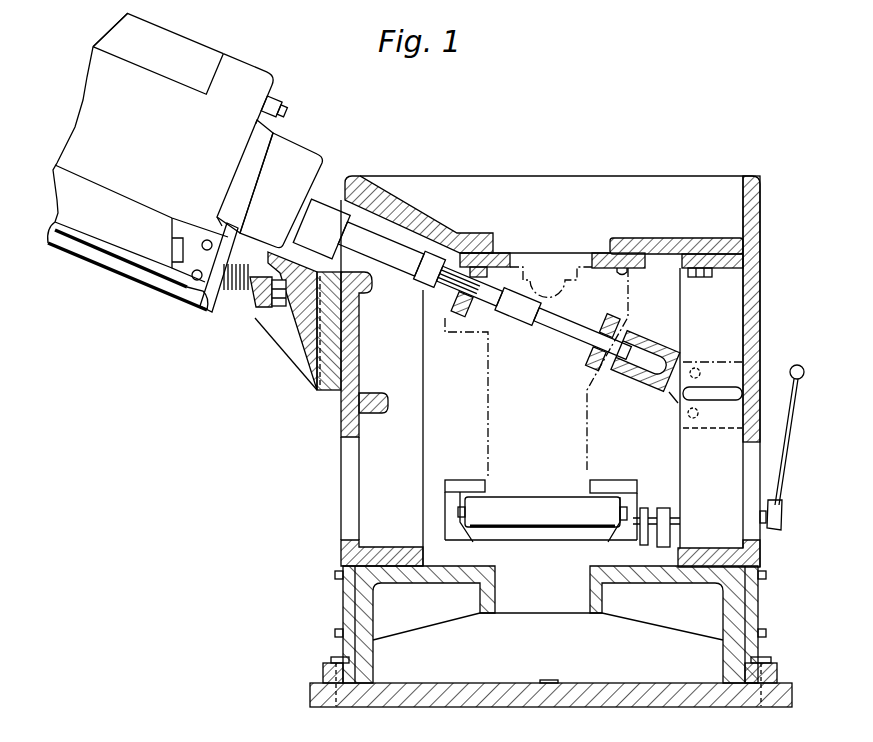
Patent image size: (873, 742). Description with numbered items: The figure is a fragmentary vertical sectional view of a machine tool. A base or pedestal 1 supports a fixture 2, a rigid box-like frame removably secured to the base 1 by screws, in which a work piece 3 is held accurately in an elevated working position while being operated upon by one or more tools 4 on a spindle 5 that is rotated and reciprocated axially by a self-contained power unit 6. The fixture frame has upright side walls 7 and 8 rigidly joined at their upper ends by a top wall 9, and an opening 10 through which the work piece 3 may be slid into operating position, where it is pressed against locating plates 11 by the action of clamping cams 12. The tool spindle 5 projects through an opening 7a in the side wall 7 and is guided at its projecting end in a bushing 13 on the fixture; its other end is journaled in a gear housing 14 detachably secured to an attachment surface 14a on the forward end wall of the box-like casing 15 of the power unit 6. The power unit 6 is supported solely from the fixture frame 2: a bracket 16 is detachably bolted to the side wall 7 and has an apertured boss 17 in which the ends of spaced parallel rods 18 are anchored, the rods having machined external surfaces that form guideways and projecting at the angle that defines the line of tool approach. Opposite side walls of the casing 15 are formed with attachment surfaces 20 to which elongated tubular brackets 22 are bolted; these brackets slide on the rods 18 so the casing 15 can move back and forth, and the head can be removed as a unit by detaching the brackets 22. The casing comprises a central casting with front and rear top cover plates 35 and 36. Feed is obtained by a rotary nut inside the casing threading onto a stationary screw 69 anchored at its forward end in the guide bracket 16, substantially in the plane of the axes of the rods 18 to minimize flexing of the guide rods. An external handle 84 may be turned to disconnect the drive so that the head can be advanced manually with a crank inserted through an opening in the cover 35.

The base 1 is at (638, 695).
The fixture 2 is at (698, 188).
The work piece 3 is at (488, 363).
The tools 4 is at (466, 305).
The spindle 5 is at (400, 263).
The power unit 6 is at (190, 179).
The side wall 7 is at (347, 426).
The opening 7a is at (353, 207).
The side wall 8 is at (756, 322).
The top wall 9 is at (643, 242).
The opening 10 is at (430, 436).
The locating plates 11 is at (500, 252).
The clamping cams 12 is at (550, 503).
The bushing 13 is at (627, 368).
The gear housing 14 is at (303, 156).
The attachment surface 14a is at (270, 167).
The casing 15 is at (98, 122).
The bracket 16 is at (317, 389).
The boss 17 is at (273, 314).
The rods 18 is at (173, 293).
The attachment surfaces 20 is at (203, 284).
The tubular brackets 22 is at (117, 248).
The front top cover plate 35 is at (260, 82).
The rear top cover plate 36 is at (181, 50).
The screw 69 is at (245, 300).
The handle 84 is at (290, 105).